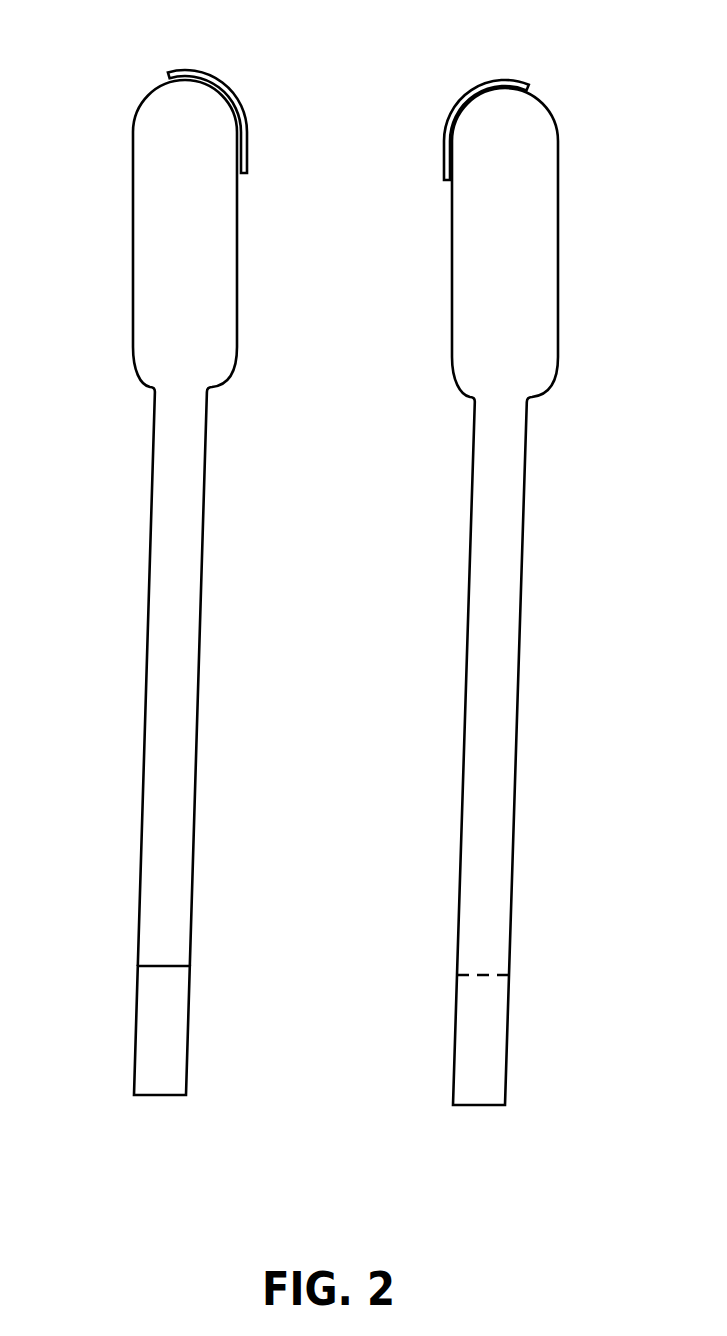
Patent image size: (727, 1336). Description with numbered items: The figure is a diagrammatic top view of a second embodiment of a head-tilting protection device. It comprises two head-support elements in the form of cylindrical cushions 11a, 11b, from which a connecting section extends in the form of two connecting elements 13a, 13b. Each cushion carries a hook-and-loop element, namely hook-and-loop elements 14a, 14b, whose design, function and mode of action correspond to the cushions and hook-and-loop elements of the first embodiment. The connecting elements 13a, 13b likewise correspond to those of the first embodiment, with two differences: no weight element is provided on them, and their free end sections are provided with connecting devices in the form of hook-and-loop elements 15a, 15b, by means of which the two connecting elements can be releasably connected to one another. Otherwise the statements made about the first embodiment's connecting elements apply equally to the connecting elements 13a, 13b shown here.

The cylindrical cushion 11a is at (150, 190).
The cylindrical cushion 11b is at (542, 202).
The connecting element 13a is at (167, 565).
The connecting element 13b is at (503, 573).
The hook-and-loop element 14a is at (193, 70).
The hook-and-loop element 14b is at (500, 85).
The hook-and-loop element 15a is at (148, 1032).
The hook-and-loop element 15b is at (495, 1042).